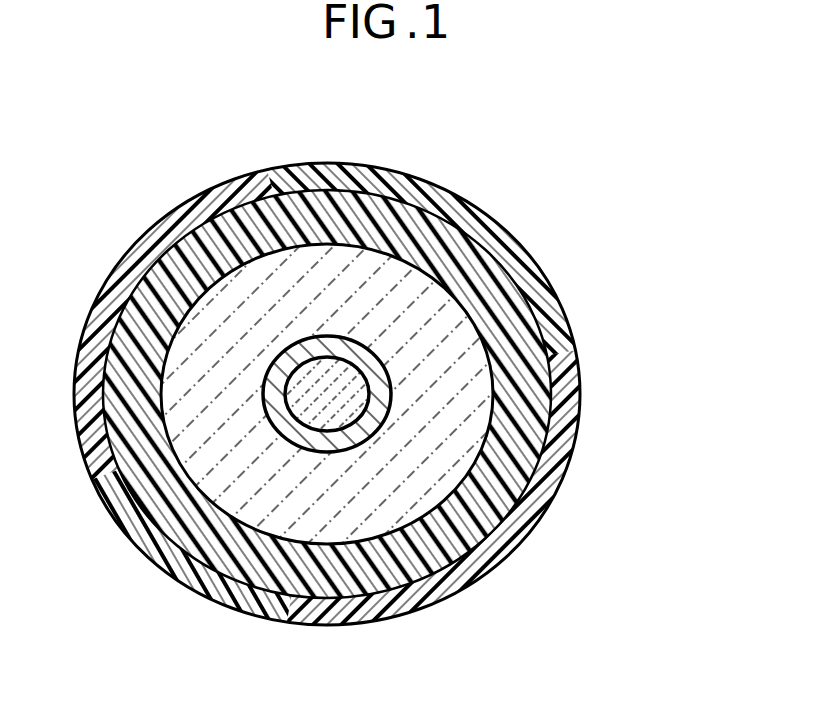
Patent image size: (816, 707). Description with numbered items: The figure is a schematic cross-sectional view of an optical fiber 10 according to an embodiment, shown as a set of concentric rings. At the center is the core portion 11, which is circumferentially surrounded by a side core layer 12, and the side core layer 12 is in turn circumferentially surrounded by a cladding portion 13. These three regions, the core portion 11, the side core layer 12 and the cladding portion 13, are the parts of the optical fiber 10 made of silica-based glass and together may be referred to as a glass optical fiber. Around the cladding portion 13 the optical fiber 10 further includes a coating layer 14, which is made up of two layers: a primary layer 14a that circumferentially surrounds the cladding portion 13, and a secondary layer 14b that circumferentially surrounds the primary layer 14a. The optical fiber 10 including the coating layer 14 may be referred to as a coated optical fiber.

The optical fiber 10 is at (515, 178).
The core portion 11 is at (364, 373).
The side core layer 12 is at (385, 403).
The cladding portion 13 is at (492, 439).
The coating layer 14 is at (662, 533).
The primary layer 14a is at (517, 497).
The secondary layer 14b is at (530, 537).